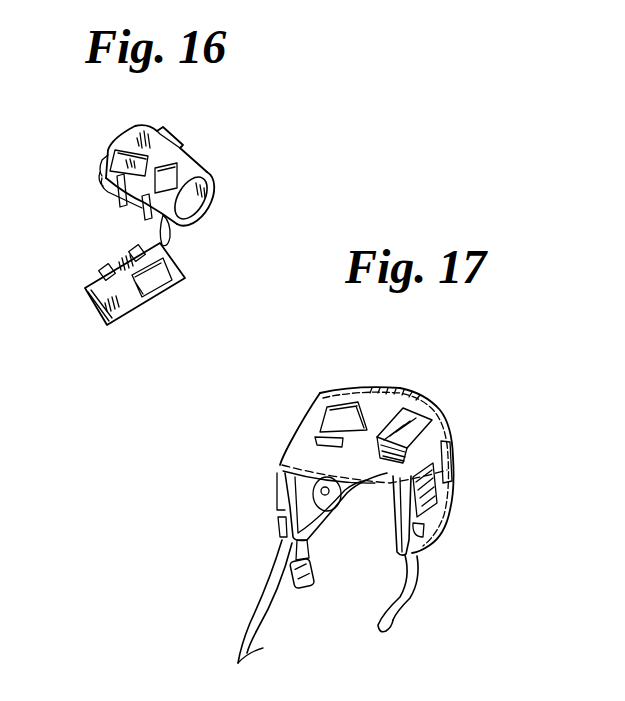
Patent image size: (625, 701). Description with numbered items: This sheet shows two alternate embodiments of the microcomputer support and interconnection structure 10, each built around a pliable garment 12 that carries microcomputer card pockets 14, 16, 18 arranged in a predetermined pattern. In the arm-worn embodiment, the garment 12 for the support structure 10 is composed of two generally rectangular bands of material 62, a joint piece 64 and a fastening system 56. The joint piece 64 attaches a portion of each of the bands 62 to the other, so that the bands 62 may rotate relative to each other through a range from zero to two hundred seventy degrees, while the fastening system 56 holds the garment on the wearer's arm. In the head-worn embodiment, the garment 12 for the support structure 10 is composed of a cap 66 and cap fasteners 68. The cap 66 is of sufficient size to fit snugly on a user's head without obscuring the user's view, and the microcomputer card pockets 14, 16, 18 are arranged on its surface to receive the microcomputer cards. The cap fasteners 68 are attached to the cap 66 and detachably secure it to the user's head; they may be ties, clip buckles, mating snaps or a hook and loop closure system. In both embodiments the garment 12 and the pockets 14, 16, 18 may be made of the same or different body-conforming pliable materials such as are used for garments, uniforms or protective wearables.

In FIG. 16, the microcomputer support and interconnection structure 10 is at (164, 215).
In FIG. 17, the microcomputer support and interconnection structure 10 is at (390, 491).
In FIG. 16, the pliable garment 12 is at (208, 167).
In FIG. 17, the pliable garment 12 is at (442, 406).
In FIG. 17, the microcomputer card pocket 14 is at (432, 488).
In FIG. 17, the microcomputer card pocket 16 is at (453, 460).
In FIG. 17, the microcomputer card pocket 18 is at (415, 417).
In FIG. 16, the fastening system 56 is at (100, 262).
In FIG. 16, the rectangular bands of material 62 is at (185, 276).
In FIG. 16, the joint piece 64 is at (160, 229).
In FIG. 17, the cap 66 is at (448, 518).
In FIG. 17, the cap fasteners 68 is at (395, 610).